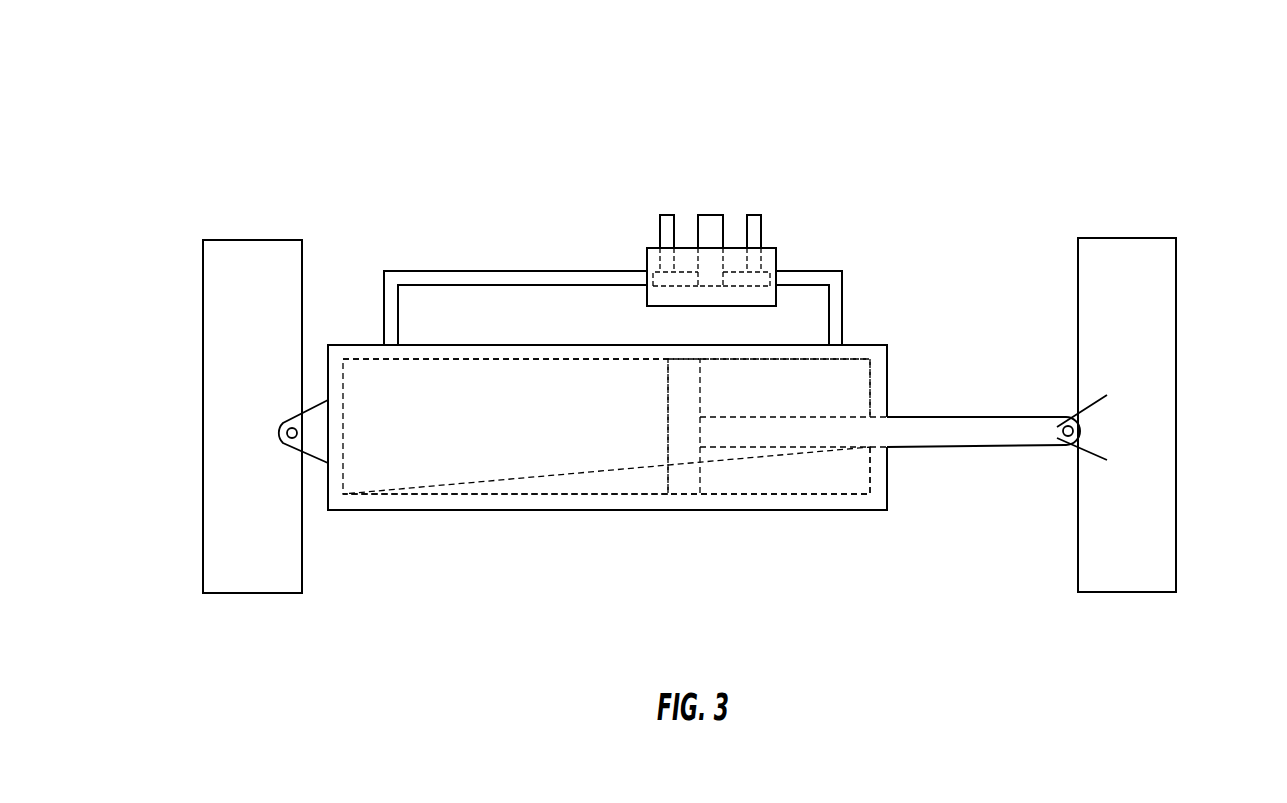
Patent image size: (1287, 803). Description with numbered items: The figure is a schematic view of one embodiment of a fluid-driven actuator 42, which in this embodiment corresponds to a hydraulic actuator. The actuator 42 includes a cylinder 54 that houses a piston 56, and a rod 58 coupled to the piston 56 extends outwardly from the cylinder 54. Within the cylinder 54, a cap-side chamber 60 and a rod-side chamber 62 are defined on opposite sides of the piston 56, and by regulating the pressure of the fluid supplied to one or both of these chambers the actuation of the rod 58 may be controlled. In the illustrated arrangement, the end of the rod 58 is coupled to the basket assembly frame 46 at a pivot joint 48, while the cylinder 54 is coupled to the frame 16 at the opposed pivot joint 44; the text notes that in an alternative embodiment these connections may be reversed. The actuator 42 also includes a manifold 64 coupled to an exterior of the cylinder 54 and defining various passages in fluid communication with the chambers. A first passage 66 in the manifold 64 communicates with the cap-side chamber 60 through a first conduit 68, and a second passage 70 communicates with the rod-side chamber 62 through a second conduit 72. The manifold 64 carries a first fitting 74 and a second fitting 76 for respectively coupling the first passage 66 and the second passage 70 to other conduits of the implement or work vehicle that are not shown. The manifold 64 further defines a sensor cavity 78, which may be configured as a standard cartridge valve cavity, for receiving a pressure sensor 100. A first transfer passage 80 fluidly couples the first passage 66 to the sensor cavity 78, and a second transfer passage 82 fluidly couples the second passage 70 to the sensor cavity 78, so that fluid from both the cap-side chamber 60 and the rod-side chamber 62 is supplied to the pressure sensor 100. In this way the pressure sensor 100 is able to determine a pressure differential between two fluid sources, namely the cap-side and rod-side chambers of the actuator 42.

The frame 16 is at (202, 398).
The actuator 42 is at (330, 167).
The pivot joint 44 is at (293, 447).
The basket assembly frame 46 is at (1176, 393).
The pivot joint 48 is at (1065, 427).
The cylinder 54 is at (602, 510).
The piston 56 is at (677, 480).
The rod 58 is at (955, 447).
The cap-side chamber 60 is at (467, 462).
The rod-side chamber 62 is at (817, 467).
The manifold 64 is at (625, 240).
The first passage 66 is at (665, 280).
The first conduit 68 is at (478, 270).
The second passage 70 is at (780, 257).
The second conduit 72 is at (842, 322).
The first fitting 74 is at (660, 233).
The second fitting 76 is at (762, 233).
The sensor cavity 78 is at (728, 307).
The first transfer passage 80 is at (690, 268).
The second transfer passage 82 is at (733, 230).
The pressure sensor 100 is at (705, 208).